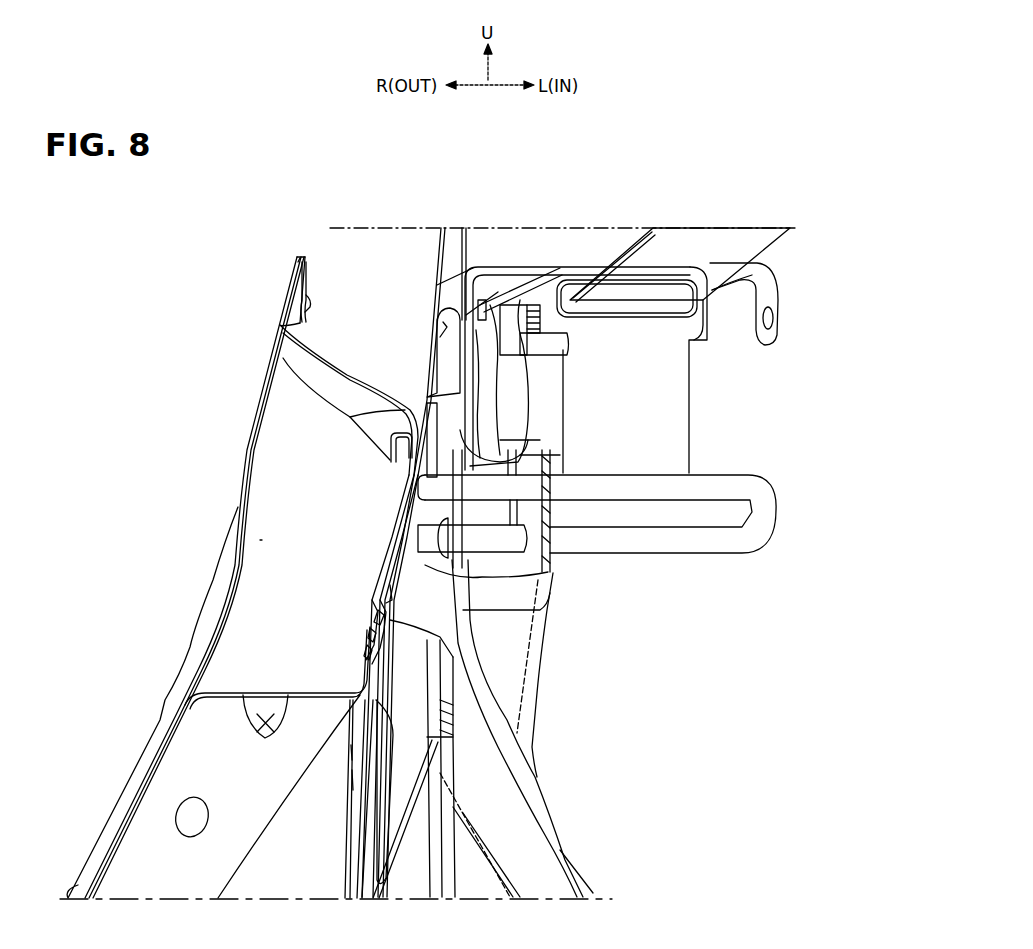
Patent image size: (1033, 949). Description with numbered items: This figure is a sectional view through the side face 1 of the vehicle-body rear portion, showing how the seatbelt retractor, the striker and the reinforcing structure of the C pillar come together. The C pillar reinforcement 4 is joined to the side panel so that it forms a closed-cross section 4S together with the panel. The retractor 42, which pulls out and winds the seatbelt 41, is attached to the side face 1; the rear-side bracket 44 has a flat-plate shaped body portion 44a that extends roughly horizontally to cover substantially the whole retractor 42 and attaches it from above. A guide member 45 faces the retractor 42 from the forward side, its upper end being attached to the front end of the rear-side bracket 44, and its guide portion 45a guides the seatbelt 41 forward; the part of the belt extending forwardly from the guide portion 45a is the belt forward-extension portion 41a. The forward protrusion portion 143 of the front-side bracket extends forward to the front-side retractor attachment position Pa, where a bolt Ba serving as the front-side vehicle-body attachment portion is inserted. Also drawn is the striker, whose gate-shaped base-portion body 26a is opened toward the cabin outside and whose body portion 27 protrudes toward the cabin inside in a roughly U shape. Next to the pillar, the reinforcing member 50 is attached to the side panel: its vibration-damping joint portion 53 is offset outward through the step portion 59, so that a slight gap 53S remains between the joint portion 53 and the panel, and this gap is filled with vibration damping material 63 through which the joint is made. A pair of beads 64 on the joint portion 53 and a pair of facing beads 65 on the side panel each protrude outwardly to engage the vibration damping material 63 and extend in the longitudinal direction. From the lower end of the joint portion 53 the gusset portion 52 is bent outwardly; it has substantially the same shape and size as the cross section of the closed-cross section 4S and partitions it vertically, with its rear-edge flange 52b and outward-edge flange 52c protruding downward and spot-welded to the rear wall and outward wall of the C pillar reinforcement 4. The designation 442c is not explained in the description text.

The side face of the vehicle-body rear portion 1 is at (167, 489).
The C pillar reinforcement 4 is at (251, 438).
The closed-cross section 4S is at (292, 535).
The base-portion body 26a is at (548, 560).
The body portion 27 is at (690, 553).
The seatbelt 41 is at (652, 228).
The belt forward-extension portion 41a is at (585, 285).
The retractor 42 is at (479, 304).
The rear-side bracket 44 is at (513, 263).
The body portion 44a is at (543, 265).
The guide member 45 is at (693, 430).
The guide portion 45a is at (610, 300).
The reinforcing member 50 is at (392, 540).
The gusset portion 52 is at (262, 692).
The rear-edge flange 52b is at (240, 700).
The outward-edge flange 52c is at (178, 730).
The vibration-damping joint portion 53 is at (359, 618).
The gap 53S is at (352, 710).
The step portion 59 is at (383, 595).
The vibration damping material 63 is at (372, 618).
The beads 64 is at (367, 632).
The beads 65 is at (365, 650).
The forward protrusion portion 143 is at (443, 370).
The flange (44b) 442c is at (453, 292).
The front-side retractor attachment position Pa is at (447, 435).
The bolt Ba is at (525, 450).